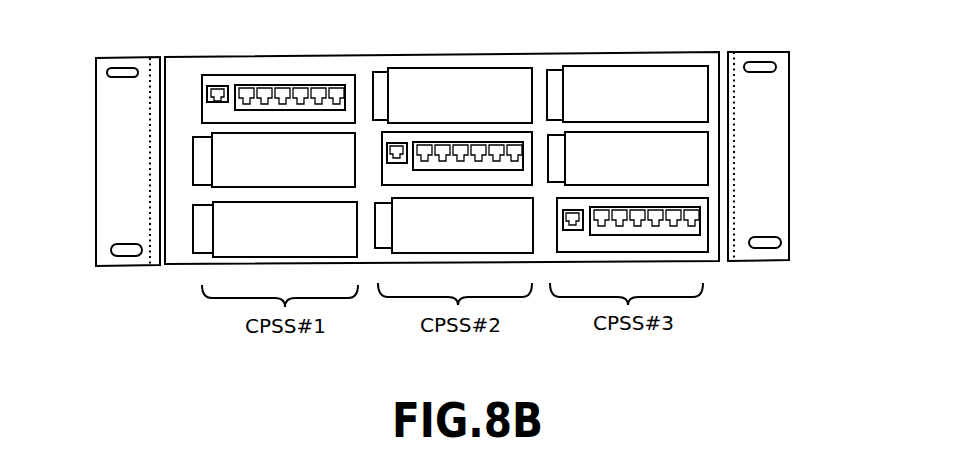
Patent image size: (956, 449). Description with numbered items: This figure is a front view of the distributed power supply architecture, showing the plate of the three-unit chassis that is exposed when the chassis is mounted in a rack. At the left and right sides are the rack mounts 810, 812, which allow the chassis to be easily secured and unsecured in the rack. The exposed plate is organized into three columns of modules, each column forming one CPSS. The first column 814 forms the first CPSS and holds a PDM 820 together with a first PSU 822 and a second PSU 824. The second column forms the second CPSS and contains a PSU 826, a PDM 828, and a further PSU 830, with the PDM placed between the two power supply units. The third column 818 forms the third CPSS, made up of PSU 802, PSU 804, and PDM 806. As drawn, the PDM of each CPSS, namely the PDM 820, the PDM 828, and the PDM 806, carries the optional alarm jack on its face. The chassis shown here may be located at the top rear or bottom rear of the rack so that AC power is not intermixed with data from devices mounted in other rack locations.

The PSU 802 is at (577, 77).
The PSU 804 is at (698, 152).
The PDM 806 is at (694, 238).
The rack mount 810 is at (108, 57).
The rack mount 812 is at (771, 50).
The column 814 is at (258, 63).
The third column 818 is at (658, 58).
The PDM 820 is at (207, 87).
The first PSU 822 is at (198, 157).
The second PSU 824 is at (203, 238).
The PSU 826 is at (408, 78).
The PDM 828 is at (390, 173).
The PSU 830 is at (450, 238).